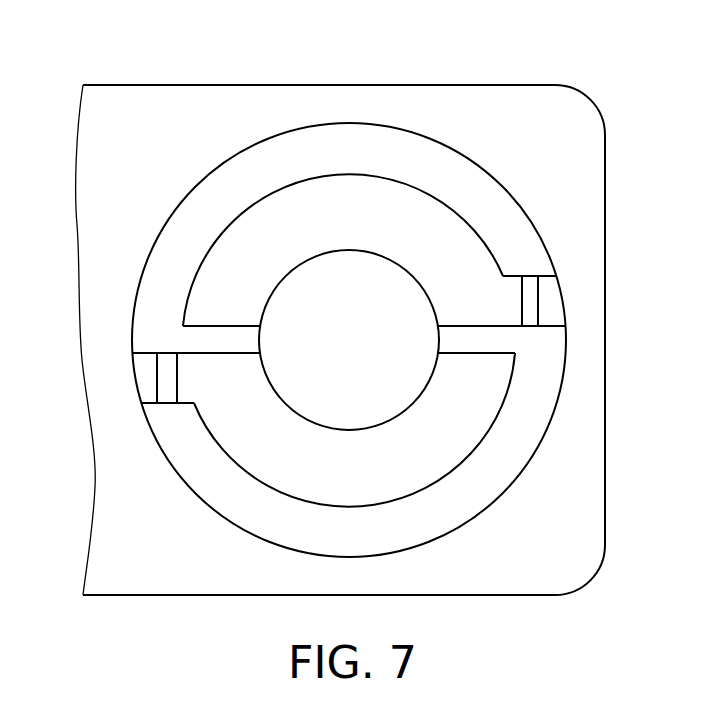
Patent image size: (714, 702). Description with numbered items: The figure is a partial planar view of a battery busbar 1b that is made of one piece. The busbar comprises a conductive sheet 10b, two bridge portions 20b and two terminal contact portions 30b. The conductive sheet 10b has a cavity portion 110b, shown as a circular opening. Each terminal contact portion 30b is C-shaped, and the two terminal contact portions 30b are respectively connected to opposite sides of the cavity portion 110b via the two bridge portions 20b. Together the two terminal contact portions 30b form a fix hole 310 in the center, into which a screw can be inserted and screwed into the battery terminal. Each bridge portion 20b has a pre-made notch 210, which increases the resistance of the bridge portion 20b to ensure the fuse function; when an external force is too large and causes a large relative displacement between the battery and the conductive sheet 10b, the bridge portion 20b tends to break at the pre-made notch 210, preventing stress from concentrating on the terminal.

The battery busbar 1b is at (146, 34).
The conductive sheet 10b is at (532, 102).
The cavity portion 110b is at (457, 492).
The terminal contact portion 30b is at (345, 203).
The fix hole 310 is at (370, 357).
The bridge portion 20b is at (558, 315).
The pre-made notch 210 is at (540, 290).